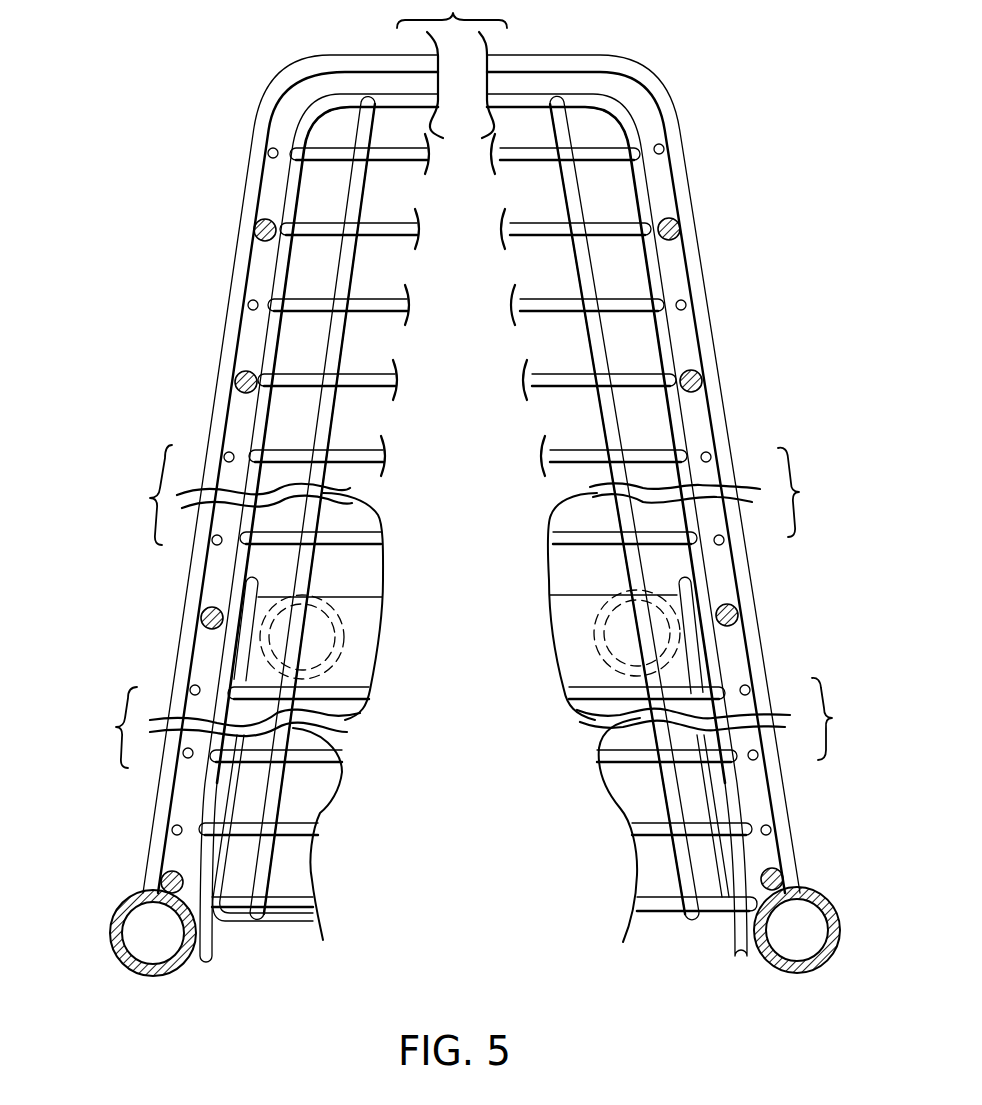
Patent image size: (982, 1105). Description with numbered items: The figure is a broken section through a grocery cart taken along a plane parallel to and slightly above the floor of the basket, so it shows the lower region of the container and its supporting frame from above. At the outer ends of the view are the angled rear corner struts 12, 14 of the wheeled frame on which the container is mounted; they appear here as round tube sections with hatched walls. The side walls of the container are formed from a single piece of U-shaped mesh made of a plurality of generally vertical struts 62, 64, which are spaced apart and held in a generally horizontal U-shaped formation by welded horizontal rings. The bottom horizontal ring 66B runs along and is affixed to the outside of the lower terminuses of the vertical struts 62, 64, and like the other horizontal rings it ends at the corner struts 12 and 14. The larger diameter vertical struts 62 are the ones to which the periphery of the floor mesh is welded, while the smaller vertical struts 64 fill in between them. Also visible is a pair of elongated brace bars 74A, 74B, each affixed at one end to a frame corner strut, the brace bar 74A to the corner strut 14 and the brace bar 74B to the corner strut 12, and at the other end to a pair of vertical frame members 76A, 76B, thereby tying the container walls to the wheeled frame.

The corner strut 12 is at (833, 905).
The corner strut 14 is at (118, 922).
The vertical strut 62 is at (255, 228).
The vertical strut 64 is at (664, 150).
The bottom horizontal ring 66B is at (228, 354).
The brace bar 74A is at (238, 672).
The brace bar 74B is at (690, 651).
The vertical frame member 76A is at (313, 597).
The vertical frame member 76B is at (623, 597).